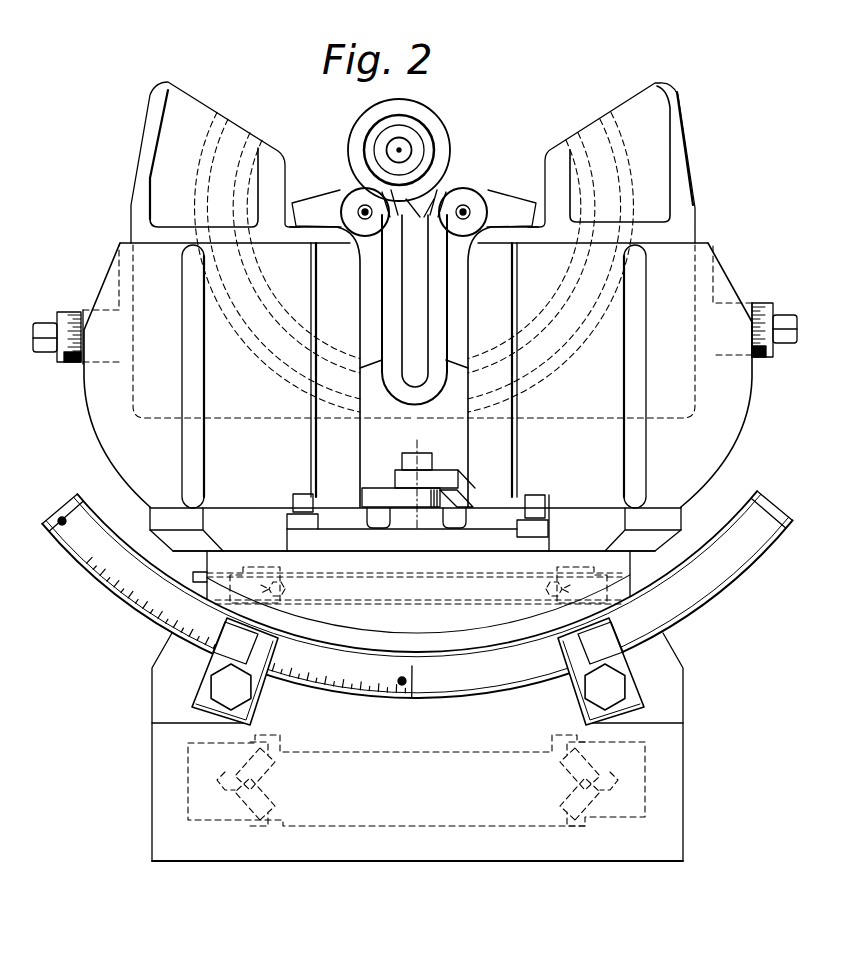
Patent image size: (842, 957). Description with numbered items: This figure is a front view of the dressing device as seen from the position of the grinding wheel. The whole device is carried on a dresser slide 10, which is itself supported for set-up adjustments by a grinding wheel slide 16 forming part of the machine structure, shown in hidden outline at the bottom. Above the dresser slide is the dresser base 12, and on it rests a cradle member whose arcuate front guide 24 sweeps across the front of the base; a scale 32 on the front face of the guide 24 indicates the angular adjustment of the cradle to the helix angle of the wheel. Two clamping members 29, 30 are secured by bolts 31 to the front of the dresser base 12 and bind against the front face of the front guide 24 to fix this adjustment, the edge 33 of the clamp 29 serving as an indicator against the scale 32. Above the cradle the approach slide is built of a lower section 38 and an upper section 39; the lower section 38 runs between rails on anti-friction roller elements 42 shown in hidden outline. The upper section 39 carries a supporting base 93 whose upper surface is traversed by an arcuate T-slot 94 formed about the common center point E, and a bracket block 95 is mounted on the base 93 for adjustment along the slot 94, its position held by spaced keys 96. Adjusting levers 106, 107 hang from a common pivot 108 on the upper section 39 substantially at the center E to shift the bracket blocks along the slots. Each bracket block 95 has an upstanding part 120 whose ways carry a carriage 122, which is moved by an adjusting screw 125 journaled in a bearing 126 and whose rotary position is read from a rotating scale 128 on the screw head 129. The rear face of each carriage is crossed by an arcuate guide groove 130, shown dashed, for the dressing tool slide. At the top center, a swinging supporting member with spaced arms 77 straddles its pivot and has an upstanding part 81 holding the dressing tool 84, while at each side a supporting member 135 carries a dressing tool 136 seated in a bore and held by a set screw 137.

The dresser slide 10 is at (684, 774).
The dresser base 12 is at (676, 697).
The grinding wheel slide 16 is at (338, 830).
The front guide 24 is at (452, 686).
The clamping member 29 is at (258, 688).
The clamping member 30 is at (586, 697).
The bolt 31 is at (210, 687).
The scale 32 is at (142, 618).
The edge of clamp 33 is at (226, 618).
The lower section of approach slide 38 is at (463, 600).
The upper section of approach slide 39 is at (437, 540).
The anti-friction roller element 42 is at (286, 589).
The arm 77 is at (407, 397).
The upstanding part 81 is at (423, 253).
The dressing tool 84 is at (402, 148).
The supporting base 93 is at (150, 521).
The T-slot 94 is at (288, 531).
The bracket block 95 is at (97, 443).
The key 96 is at (294, 499).
The adjusting lever 106 is at (438, 473).
The adjusting lever 107 is at (375, 489).
The common pivot 108 is at (432, 458).
The upstanding part 120 is at (122, 244).
The carriage 122 is at (252, 421).
The adjusting screw 125 is at (42, 324).
The bearing 126 is at (96, 366).
The rotating scale 128 is at (72, 357).
The head 129 is at (63, 312).
The arcuate guide groove 130 is at (250, 332).
The supporting member 135 is at (315, 205).
The dressing tool 136 is at (428, 205).
The set screw 137 is at (362, 206).
The common center point E is at (419, 450).